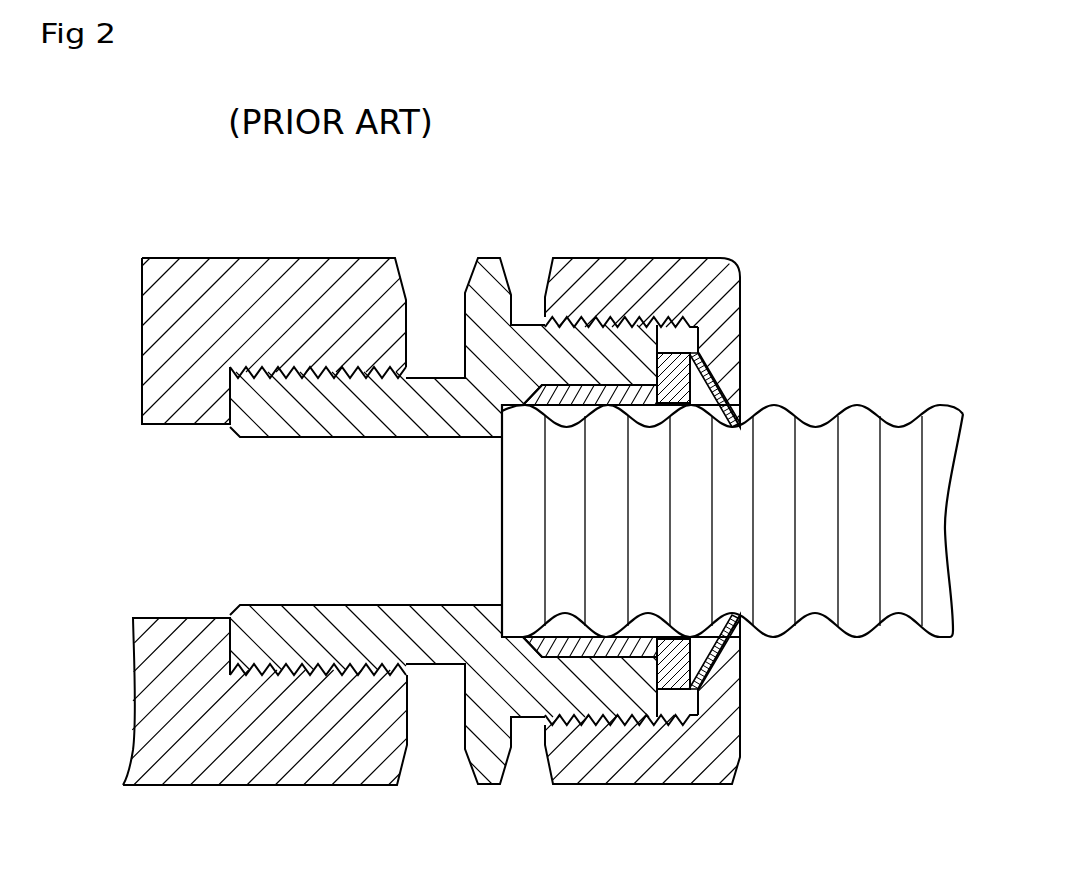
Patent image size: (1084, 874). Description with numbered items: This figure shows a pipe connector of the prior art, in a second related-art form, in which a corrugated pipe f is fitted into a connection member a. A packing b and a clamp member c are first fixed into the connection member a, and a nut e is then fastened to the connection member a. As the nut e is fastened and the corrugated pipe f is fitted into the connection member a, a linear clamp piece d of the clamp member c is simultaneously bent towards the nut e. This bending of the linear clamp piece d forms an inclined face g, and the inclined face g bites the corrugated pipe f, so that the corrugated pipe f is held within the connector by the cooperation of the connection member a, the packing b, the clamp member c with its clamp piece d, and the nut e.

The connection member a is at (467, 274).
The packing b is at (613, 397).
The clamp member c is at (694, 378).
The linear clamp piece d is at (728, 412).
The nut e is at (726, 290).
The corrugated pipe f is at (858, 636).
The inclined face g is at (687, 645).